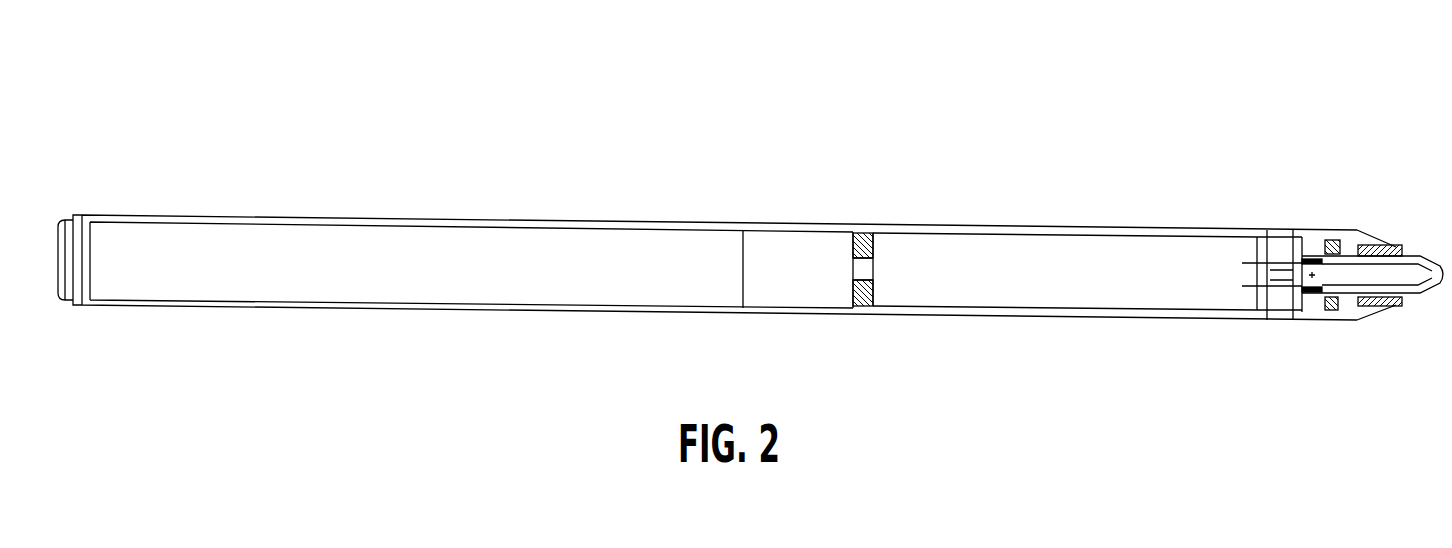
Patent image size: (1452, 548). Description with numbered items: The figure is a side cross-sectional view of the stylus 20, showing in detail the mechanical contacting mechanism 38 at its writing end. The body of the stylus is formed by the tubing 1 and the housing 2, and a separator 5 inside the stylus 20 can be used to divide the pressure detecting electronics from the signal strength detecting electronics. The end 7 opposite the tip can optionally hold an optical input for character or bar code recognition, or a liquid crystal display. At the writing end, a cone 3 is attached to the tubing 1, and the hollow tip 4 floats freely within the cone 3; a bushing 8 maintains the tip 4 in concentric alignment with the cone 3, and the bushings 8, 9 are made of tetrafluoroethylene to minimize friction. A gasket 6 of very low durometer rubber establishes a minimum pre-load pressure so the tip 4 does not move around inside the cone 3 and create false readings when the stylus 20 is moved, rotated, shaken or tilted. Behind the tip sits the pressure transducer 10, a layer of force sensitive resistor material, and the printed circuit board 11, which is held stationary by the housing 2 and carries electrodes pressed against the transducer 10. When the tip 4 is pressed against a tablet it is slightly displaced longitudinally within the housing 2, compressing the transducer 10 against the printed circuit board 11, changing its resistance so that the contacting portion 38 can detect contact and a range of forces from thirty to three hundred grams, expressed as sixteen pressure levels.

The stylus 20 is at (392, 150).
The tubing 1 is at (707, 221).
The housing 2 is at (1125, 227).
The cone 3 is at (1315, 229).
The tip 4 is at (1445, 256).
The separator 5 is at (860, 307).
The gasket 6 is at (1333, 311).
The end 7 is at (63, 305).
The bushing 8 is at (1388, 245).
The bushing 9 is at (1309, 293).
The pressure transducer 10 is at (1277, 292).
The printed circuit board 11 is at (1296, 230).
The mechanical contacting mechanism 38 is at (1354, 138).